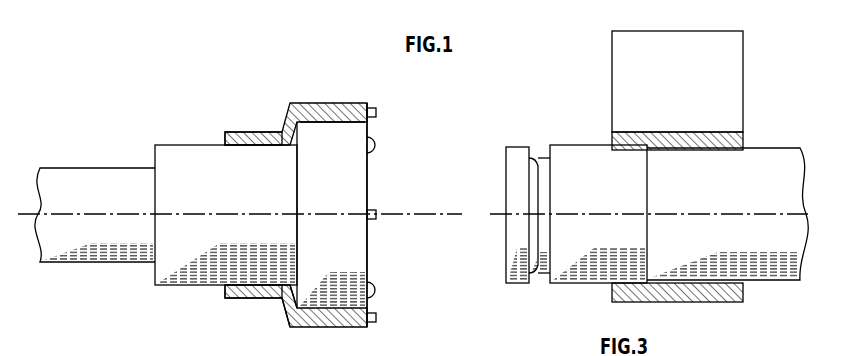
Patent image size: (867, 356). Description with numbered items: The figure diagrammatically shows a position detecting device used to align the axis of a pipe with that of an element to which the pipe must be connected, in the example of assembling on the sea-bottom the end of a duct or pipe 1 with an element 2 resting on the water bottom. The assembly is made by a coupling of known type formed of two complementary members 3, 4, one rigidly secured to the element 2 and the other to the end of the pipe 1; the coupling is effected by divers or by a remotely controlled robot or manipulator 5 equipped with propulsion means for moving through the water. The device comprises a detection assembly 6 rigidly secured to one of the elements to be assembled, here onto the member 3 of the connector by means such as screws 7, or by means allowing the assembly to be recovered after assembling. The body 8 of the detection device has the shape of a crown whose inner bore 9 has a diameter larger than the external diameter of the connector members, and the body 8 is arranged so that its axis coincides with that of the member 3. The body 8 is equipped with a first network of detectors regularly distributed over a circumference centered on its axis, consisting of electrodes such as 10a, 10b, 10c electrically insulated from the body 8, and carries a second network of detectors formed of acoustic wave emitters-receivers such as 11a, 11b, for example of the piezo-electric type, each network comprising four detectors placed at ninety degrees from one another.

In FIG. 3, the pipe 1 is at (766, 147).
In FIG. 1, the element 2 is at (90, 167).
In FIG. 1, the member 3 is at (160, 144).
In FIG. 3, the member 4 is at (517, 146).
In FIG. 3, the manipulator 5 is at (627, 72).
In FIG. 1, the detection assembly 6 is at (299, 82).
In FIG. 1, the screws 7 is at (237, 131).
In FIG. 1, the body 8 is at (278, 300).
In FIG. 1, the inner bore 9 is at (335, 130).
In FIG. 1, the electrode 10a is at (376, 112).
In FIG. 1, the electrode 10b is at (376, 213).
In FIG. 1, the electrode 10c is at (376, 318).
In FIG. 1, the acoustic wave emitter-receiver 11a is at (375, 146).
In FIG. 1, the acoustic wave emitter-receiver 11b is at (375, 288).